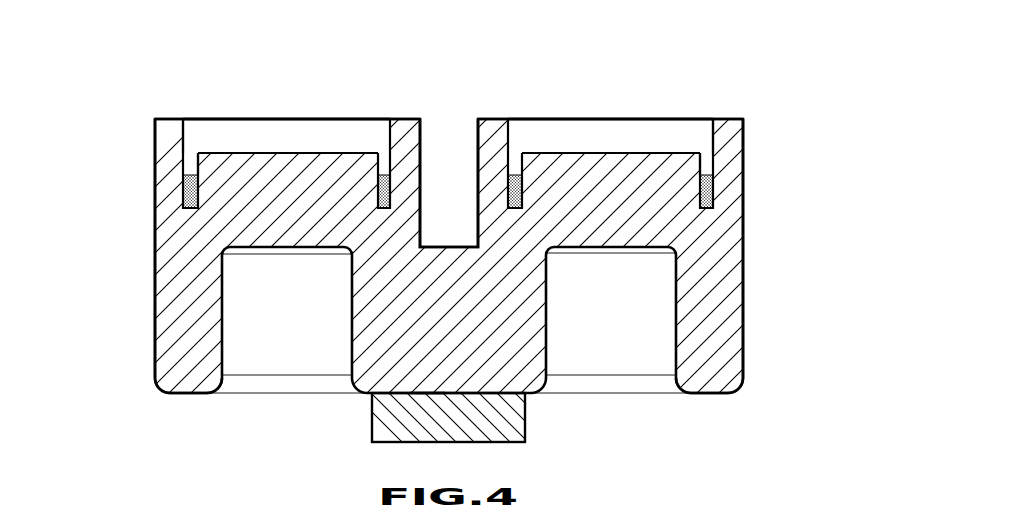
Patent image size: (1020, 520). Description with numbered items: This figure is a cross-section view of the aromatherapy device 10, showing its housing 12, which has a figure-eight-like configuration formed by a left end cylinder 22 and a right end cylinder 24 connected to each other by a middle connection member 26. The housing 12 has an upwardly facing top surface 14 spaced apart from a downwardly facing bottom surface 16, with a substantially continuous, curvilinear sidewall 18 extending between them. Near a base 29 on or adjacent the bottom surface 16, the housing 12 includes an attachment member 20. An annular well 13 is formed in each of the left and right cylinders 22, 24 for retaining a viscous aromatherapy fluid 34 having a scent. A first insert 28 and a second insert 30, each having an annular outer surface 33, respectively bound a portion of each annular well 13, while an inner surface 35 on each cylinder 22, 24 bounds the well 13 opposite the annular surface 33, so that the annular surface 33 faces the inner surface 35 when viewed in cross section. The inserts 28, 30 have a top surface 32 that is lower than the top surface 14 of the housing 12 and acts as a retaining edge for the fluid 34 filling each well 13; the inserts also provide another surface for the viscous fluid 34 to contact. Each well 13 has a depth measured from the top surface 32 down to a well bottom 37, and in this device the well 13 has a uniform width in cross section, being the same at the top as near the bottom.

The aromatherapy device 10 is at (692, 68).
The housing 12 is at (148, 270).
The annular well 13 is at (185, 162).
The top surface 14 is at (168, 118).
The bottom surface 16 is at (192, 394).
The sidewall 18 is at (155, 297).
The attachment member 20 is at (520, 424).
The left end cylinder 22 is at (246, 106).
The right end cylinder 24 is at (650, 106).
The middle connection member 26 is at (445, 241).
The first insert 28 is at (298, 146).
The base 29 is at (424, 404).
The second insert 30 is at (596, 146).
The top surface 32 is at (448, 85).
The annular outer surface 33 is at (370, 127).
The aromatherapy fluid 34 is at (188, 188).
The inner surface 35 is at (199, 125).
The well bottom 37 is at (193, 209).